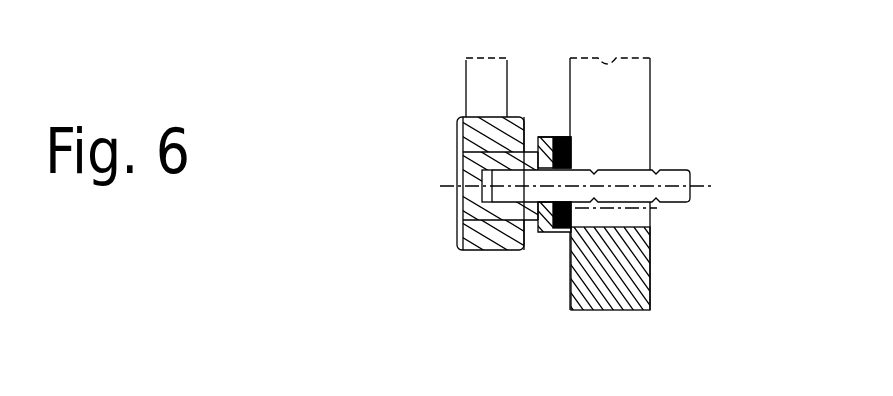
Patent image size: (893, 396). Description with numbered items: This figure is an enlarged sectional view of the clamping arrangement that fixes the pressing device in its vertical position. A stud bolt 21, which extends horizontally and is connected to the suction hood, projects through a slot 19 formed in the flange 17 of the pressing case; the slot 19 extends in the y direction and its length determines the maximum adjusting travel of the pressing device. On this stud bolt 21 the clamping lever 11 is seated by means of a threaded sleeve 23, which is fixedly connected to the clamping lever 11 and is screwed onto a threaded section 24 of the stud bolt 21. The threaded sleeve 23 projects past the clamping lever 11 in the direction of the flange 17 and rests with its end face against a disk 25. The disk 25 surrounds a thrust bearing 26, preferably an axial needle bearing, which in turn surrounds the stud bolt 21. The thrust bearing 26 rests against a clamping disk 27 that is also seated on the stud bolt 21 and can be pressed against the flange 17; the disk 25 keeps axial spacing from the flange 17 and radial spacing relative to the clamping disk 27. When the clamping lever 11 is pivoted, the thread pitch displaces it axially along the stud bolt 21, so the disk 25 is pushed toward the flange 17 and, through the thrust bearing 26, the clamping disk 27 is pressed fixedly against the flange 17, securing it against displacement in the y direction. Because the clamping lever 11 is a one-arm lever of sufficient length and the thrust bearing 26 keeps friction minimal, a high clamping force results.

The clamping lever 11 is at (462, 238).
The flange 17 is at (623, 274).
The slot 19 is at (628, 110).
The stud bolt 21 is at (665, 181).
The threaded sleeve 23 is at (463, 148).
The threaded section 24 is at (512, 184).
The disk 25 is at (541, 222).
The thrust bearing 26 is at (556, 136).
The clamping disk 27 is at (567, 236).